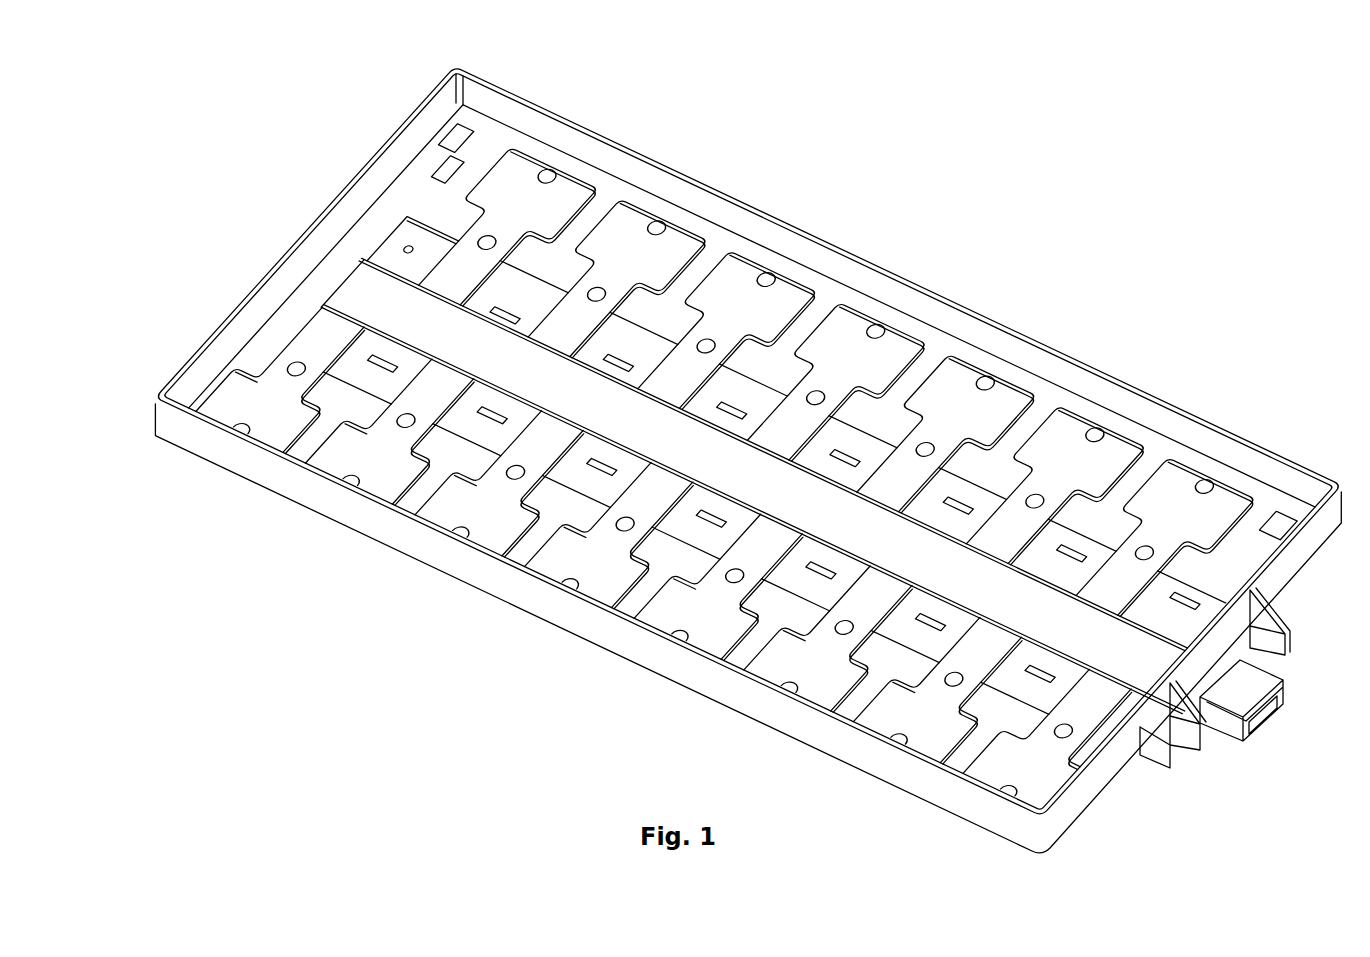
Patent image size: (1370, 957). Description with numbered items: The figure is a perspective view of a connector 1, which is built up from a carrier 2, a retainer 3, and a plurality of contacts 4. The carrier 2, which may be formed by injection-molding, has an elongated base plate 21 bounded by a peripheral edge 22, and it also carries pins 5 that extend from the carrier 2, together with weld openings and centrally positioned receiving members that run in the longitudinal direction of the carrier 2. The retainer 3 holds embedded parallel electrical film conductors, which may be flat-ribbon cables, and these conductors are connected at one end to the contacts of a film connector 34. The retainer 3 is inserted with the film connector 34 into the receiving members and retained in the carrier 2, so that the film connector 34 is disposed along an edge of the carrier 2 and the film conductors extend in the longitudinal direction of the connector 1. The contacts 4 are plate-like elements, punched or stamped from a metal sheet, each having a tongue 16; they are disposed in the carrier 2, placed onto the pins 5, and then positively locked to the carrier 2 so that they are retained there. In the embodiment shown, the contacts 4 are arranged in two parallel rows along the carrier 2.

The connector 1 is at (316, 128).
The carrier 2 is at (1320, 530).
The retainer 3 is at (950, 516).
The contacts 4 is at (572, 193).
The pins 5 is at (768, 272).
The tongue 16 is at (317, 350).
The elongated base plate 21 is at (352, 296).
The peripheral edge 22 is at (213, 447).
The film connector 34 is at (1224, 717).